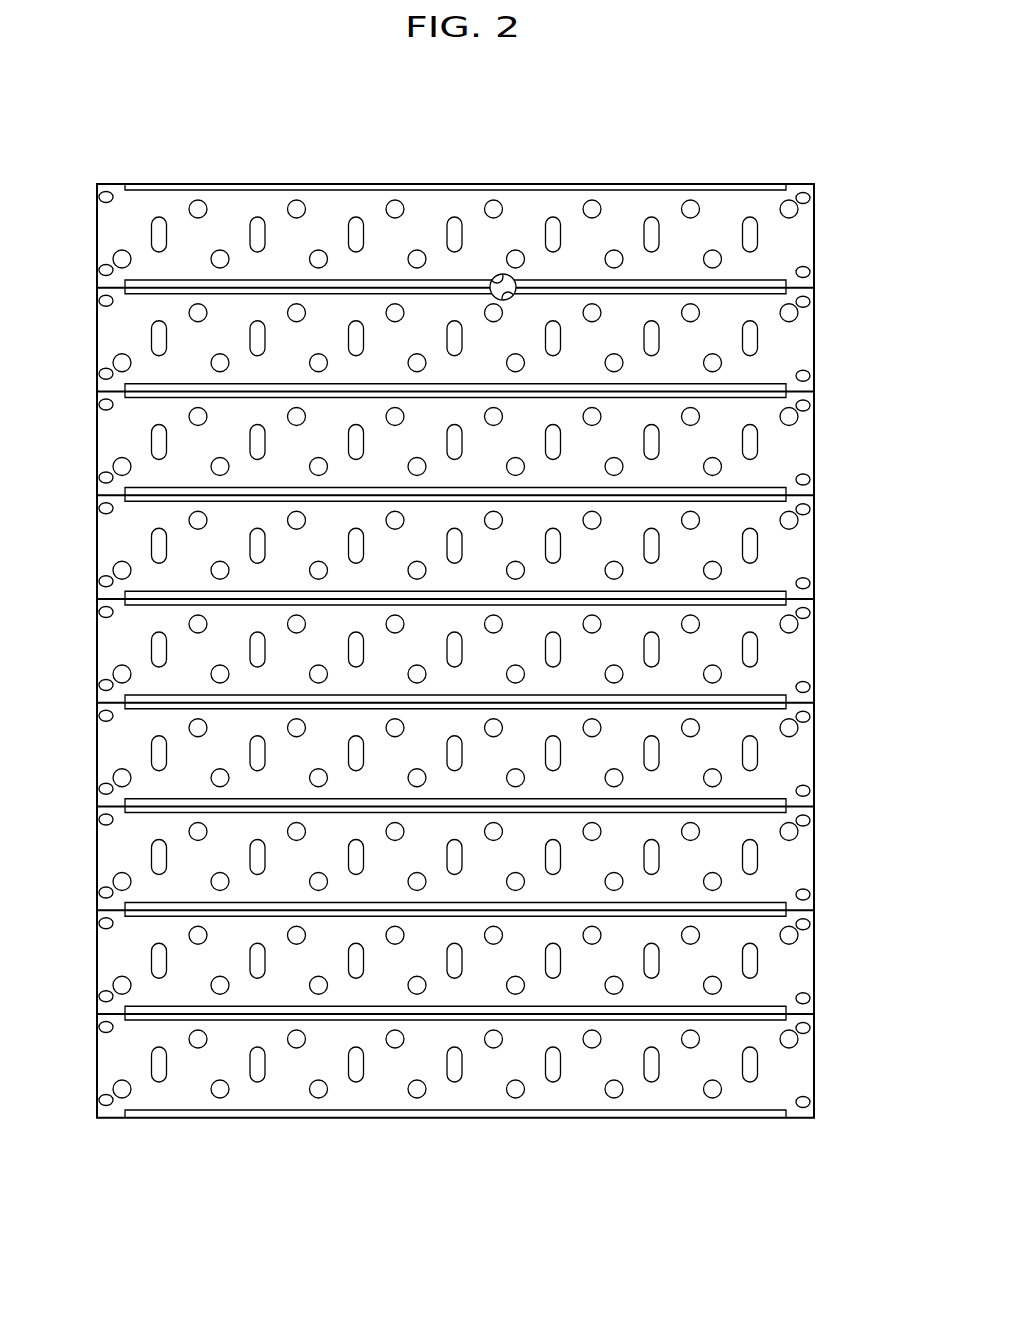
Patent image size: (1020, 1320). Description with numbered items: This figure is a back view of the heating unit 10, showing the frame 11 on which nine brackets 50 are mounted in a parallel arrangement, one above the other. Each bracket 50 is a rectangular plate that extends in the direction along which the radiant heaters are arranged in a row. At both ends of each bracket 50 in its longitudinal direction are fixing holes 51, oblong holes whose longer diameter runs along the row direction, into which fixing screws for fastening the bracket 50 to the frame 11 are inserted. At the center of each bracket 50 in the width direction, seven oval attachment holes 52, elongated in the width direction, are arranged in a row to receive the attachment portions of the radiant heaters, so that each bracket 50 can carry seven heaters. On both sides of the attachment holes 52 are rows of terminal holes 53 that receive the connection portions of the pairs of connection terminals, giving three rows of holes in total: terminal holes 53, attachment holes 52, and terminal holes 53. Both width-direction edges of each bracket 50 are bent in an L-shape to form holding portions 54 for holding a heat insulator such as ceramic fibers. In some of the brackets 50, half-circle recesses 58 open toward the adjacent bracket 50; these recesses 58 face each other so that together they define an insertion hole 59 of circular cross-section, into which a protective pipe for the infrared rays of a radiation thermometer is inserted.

The heating unit 10 is at (839, 114).
The frame 11 is at (106, 1138).
The bracket 50 is at (477, 671).
The fixing hole 51 is at (96, 196).
The attachment hole 52 is at (160, 1081).
The terminal hole 53 is at (199, 1041).
The holding portion 54 is at (266, 186).
The recess 58 is at (496, 276).
The insertion hole 59 is at (512, 292).